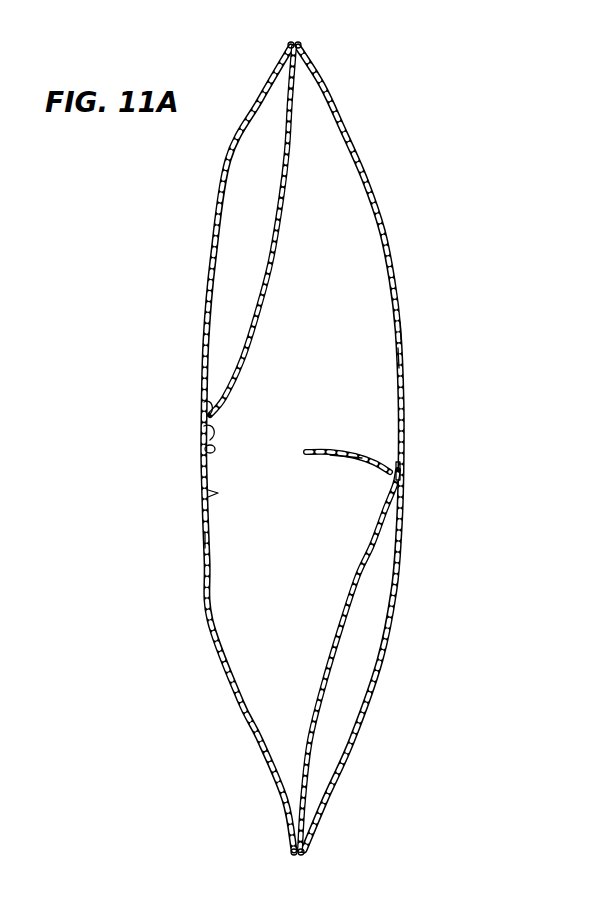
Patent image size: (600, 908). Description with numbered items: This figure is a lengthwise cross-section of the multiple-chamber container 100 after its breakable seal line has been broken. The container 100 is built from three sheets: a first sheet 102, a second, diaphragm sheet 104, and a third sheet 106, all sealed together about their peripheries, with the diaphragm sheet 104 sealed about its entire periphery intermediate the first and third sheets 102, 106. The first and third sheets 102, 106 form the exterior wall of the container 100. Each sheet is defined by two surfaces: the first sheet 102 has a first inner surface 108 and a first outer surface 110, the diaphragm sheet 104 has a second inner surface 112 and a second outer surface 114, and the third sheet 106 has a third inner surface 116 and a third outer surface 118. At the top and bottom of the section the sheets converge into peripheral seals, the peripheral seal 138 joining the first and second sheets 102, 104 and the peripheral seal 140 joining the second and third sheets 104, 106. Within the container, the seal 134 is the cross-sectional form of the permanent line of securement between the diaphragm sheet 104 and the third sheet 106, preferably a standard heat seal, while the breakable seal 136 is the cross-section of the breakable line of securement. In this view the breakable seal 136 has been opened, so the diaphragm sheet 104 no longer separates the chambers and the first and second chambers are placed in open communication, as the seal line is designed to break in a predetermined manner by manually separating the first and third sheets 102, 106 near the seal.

The multiple-chamber container 100 is at (432, 186).
The first sheet 102 is at (218, 208).
The second, diaphragm sheet 104 is at (276, 226).
The third sheet 106 is at (388, 258).
The first inner surface 108 is at (208, 494).
The first outer surface 110 is at (204, 540).
The second inner surface 112 is at (284, 190).
The second outer surface 114 is at (262, 277).
The third inner surface 116 is at (398, 360).
The third outer surface 118 is at (402, 330).
The seal 134 is at (404, 472).
The breakable seal 136 is at (214, 430).
The peripheral seal 138 is at (290, 44).
The peripheral seal 140 is at (298, 44).